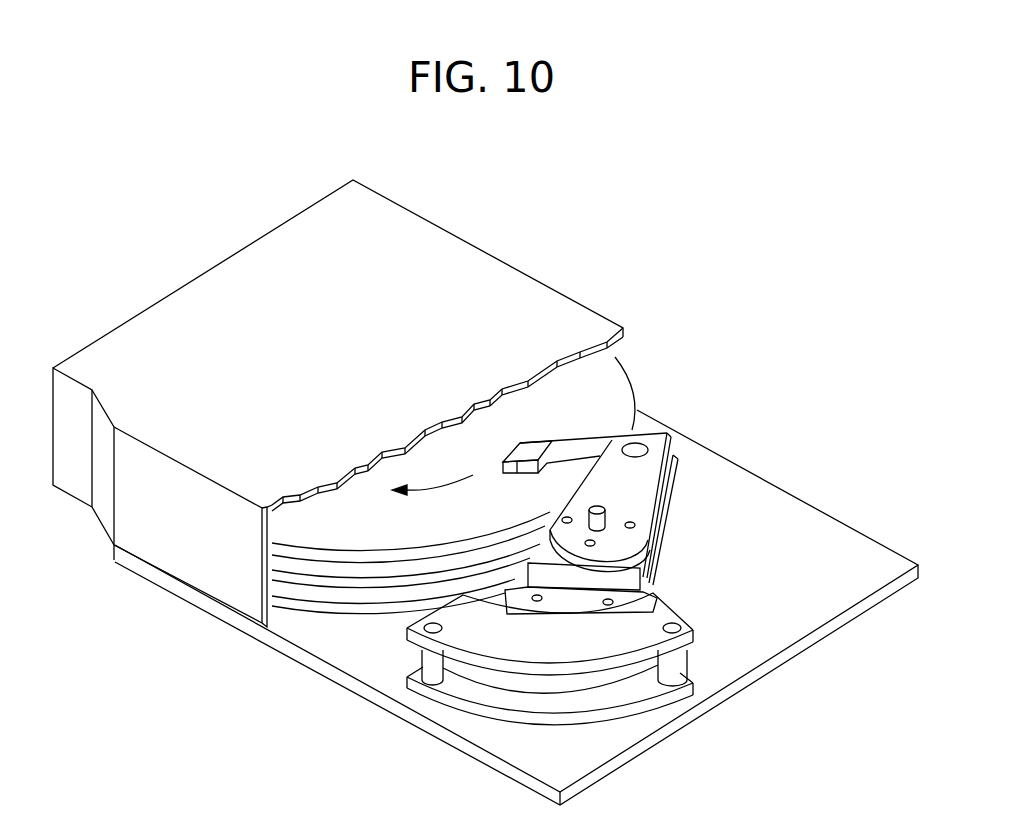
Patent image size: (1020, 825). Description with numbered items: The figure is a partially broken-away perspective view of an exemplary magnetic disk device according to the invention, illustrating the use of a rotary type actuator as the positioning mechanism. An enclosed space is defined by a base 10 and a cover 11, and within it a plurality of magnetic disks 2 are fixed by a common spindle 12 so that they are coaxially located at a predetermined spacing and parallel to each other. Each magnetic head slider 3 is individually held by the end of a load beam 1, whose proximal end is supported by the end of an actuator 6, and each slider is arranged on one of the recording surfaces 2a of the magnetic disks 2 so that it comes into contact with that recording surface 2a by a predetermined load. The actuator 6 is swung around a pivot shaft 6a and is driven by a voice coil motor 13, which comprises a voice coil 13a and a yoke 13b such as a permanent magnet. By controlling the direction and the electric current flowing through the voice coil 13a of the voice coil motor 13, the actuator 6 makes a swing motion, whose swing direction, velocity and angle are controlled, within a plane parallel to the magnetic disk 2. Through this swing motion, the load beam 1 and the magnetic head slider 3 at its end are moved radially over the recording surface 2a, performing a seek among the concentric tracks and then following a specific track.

The load beam 1 is at (568, 443).
The magnetic disks 2 is at (338, 532).
The recording surfaces 2a is at (553, 407).
The magnetic head slider 3 is at (510, 465).
The actuator 6 is at (645, 502).
The pivot shaft 6a is at (632, 522).
The base 10 is at (818, 530).
The cover 11 is at (160, 326).
The spindle 12 is at (445, 438).
The voice coil motor 13 is at (800, 727).
The voice coil 13a is at (602, 612).
The yoke 13b is at (573, 657).